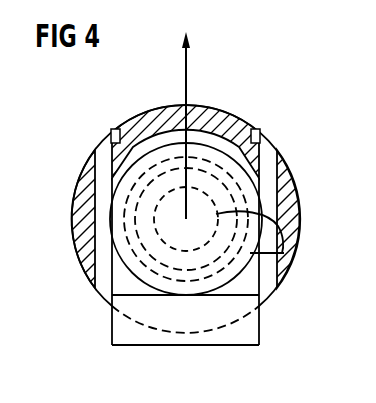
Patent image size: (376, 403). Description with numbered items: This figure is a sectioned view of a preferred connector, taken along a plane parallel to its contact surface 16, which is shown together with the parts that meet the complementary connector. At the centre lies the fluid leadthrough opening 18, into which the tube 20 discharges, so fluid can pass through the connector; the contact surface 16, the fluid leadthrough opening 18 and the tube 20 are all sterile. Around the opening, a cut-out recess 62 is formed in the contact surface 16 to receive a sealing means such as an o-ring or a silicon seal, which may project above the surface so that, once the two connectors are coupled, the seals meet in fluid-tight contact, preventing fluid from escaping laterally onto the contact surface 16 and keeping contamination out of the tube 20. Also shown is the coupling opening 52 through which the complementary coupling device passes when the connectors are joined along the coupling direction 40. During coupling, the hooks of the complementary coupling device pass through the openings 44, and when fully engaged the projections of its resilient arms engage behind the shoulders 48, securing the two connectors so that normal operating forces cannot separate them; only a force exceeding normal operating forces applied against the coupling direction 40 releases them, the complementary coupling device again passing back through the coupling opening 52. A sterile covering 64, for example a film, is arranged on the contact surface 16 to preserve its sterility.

The contact surface 16 is at (97, 278).
The fluid leadthrough opening 18 is at (285, 254).
The tube 20 is at (275, 212).
The coupling direction 40 is at (188, 80).
The openings 44 is at (98, 143).
The shoulders 48 is at (114, 136).
The coupling opening 52 is at (201, 331).
The cut-out recess 62 is at (130, 243).
The sterile covering 64 is at (259, 331).